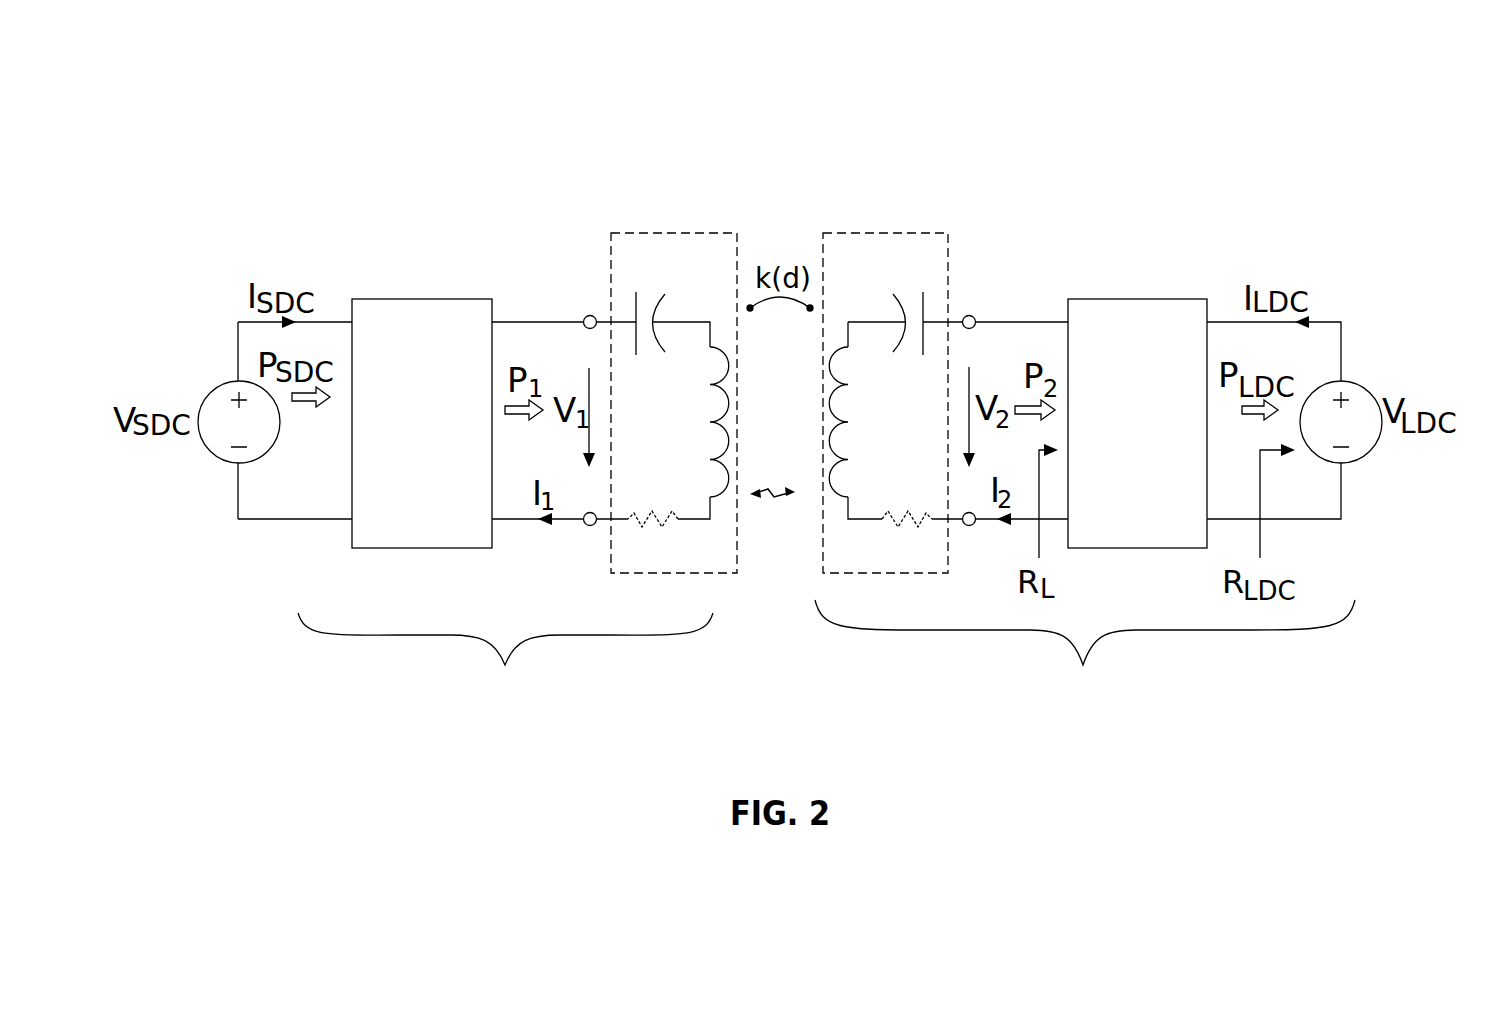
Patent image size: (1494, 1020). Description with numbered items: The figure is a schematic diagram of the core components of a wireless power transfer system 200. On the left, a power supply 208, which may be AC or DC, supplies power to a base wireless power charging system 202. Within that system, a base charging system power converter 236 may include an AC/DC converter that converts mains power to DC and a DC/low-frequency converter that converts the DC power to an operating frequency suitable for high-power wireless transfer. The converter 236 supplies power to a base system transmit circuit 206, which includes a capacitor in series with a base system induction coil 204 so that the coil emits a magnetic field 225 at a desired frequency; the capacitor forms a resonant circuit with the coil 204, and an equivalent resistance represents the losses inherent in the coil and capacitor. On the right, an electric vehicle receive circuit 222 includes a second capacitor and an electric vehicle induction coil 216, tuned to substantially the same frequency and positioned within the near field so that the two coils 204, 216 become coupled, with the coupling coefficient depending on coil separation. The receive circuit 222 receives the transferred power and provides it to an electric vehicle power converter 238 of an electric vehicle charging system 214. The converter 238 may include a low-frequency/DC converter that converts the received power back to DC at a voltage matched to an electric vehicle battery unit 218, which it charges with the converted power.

The wireless power transfer system 200 is at (1168, 135).
The base wireless power charging system 202 is at (506, 670).
The base system induction coil 204 is at (713, 478).
The base system transmit circuit 206 is at (633, 233).
The power supply 208 is at (224, 388).
The electric vehicle charging system 214 is at (1085, 679).
The electric vehicle induction coil 216 is at (833, 405).
The electric vehicle battery unit 218 is at (1352, 386).
The electric vehicle receive circuit 222 is at (852, 233).
The magnetic field 225 is at (768, 510).
The base charging system power converter 236 is at (420, 298).
The electric vehicle power converter 238 is at (1088, 299).